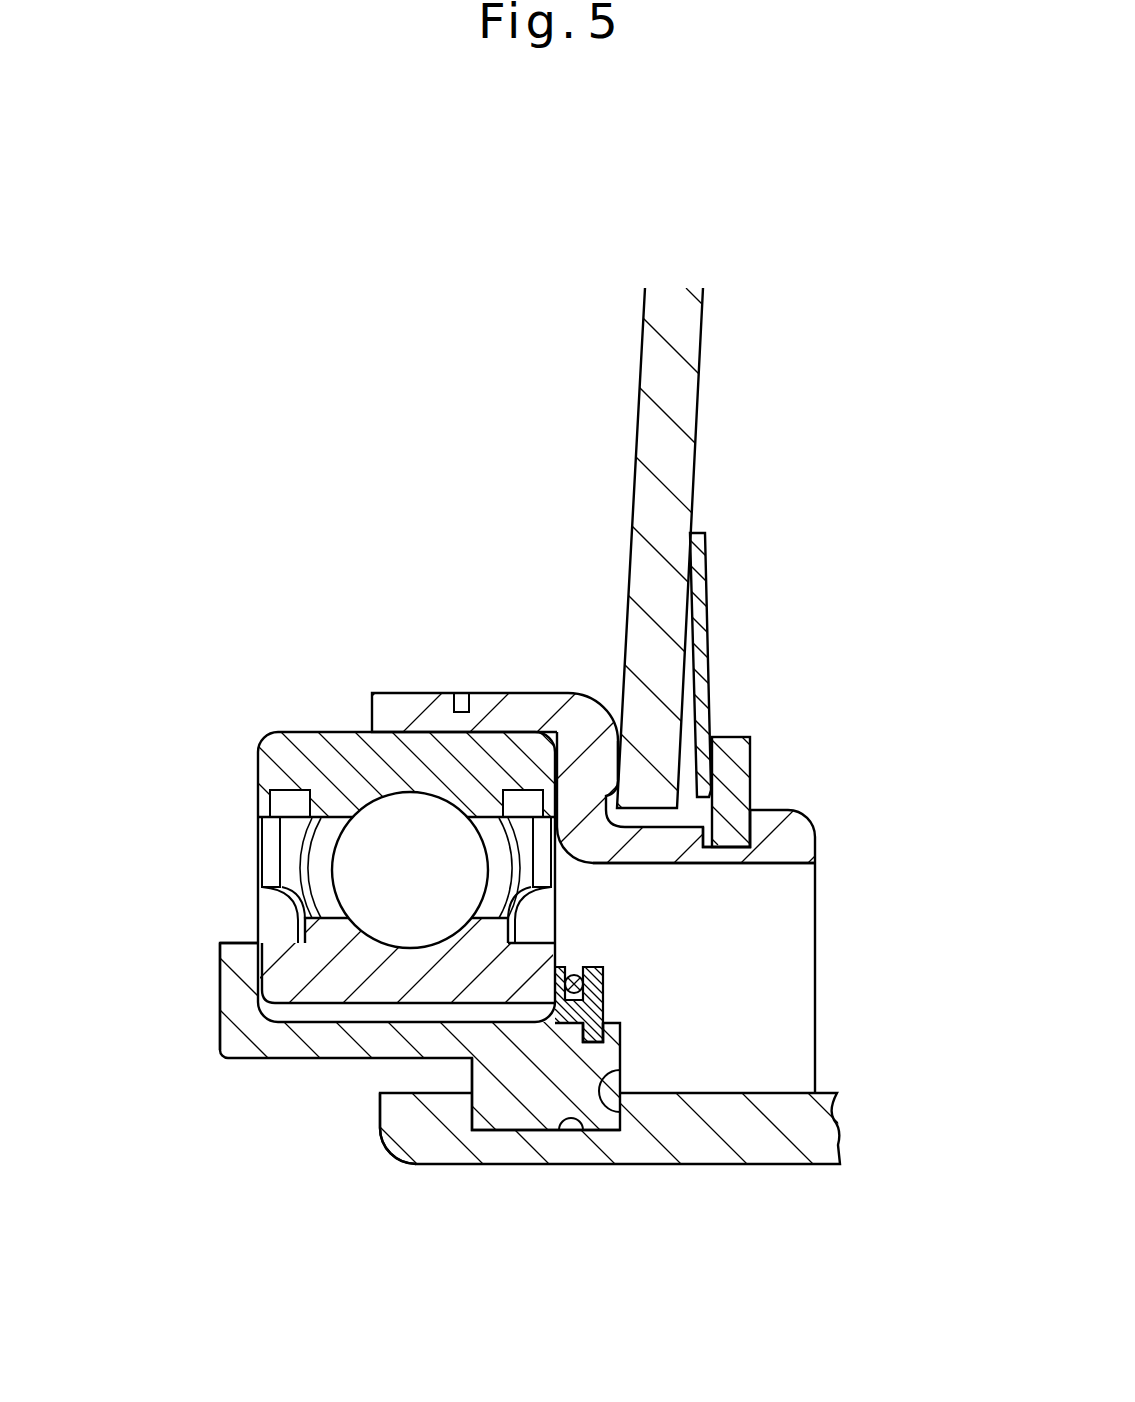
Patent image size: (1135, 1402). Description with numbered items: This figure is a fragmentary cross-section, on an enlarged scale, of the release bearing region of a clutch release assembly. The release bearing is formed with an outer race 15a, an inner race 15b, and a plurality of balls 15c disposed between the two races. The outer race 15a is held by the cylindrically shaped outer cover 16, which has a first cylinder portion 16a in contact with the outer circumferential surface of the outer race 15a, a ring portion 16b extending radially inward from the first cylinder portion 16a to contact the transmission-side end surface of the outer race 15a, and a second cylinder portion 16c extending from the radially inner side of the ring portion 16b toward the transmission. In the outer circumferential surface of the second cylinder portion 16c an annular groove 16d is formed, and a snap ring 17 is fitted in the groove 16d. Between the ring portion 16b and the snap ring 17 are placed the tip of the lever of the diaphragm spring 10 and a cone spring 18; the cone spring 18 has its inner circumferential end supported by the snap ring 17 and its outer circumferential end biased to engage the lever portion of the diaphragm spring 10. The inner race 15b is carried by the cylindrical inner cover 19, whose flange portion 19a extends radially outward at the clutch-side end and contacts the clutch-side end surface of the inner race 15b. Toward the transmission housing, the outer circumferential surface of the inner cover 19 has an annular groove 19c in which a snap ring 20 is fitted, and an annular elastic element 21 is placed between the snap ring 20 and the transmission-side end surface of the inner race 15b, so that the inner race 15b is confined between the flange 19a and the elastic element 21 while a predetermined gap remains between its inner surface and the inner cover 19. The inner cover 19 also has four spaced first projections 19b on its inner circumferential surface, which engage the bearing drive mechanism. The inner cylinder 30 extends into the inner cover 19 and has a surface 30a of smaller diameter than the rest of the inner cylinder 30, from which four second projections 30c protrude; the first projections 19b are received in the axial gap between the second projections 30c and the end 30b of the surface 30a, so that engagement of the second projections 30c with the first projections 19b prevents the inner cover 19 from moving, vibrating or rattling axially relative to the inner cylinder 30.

The diaphragm spring 10 is at (667, 462).
The outer race 15a is at (340, 743).
The inner race 15b is at (327, 977).
The balls 15c is at (375, 853).
The outer cover 16 is at (520, 685).
The first cylinder portion 16a is at (440, 703).
The ring portion 16b is at (590, 775).
The second cylinder portion 16c is at (643, 853).
The annular groove 16d is at (710, 833).
The snap ring 17 is at (740, 760).
The cone spring 18 is at (700, 638).
The inner cover 19 is at (357, 1065).
The flange portion 19a is at (237, 987).
The first projections 19b is at (530, 1110).
The annular groove 19c is at (587, 1045).
The snap ring 20 is at (603, 993).
The annular elastic element 21 is at (580, 965).
The inner cylinder 30 is at (777, 1147).
The surface 30a is at (572, 1130).
The end 30b is at (620, 1072).
The second projections 30c is at (415, 1108).